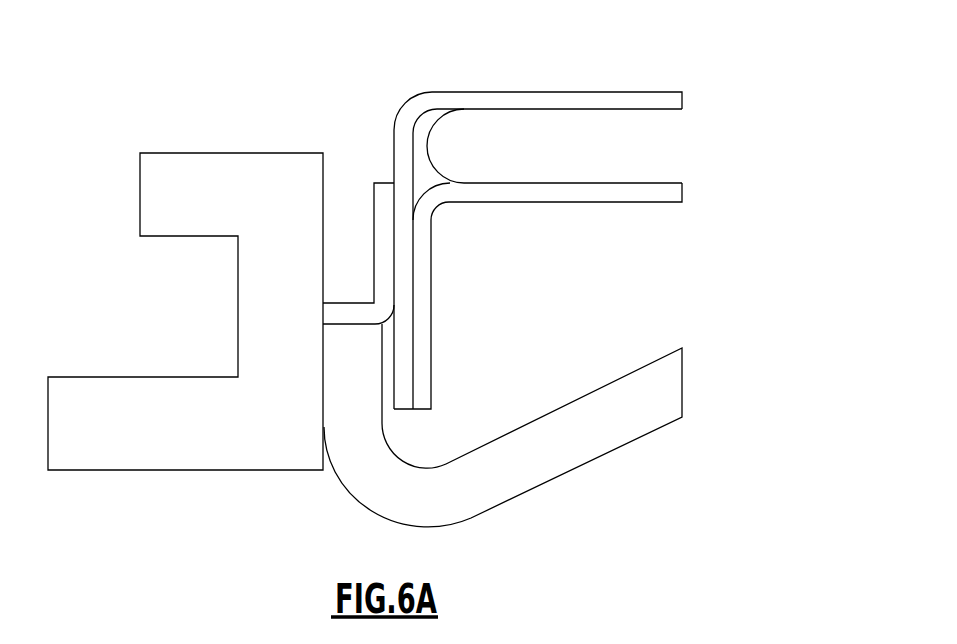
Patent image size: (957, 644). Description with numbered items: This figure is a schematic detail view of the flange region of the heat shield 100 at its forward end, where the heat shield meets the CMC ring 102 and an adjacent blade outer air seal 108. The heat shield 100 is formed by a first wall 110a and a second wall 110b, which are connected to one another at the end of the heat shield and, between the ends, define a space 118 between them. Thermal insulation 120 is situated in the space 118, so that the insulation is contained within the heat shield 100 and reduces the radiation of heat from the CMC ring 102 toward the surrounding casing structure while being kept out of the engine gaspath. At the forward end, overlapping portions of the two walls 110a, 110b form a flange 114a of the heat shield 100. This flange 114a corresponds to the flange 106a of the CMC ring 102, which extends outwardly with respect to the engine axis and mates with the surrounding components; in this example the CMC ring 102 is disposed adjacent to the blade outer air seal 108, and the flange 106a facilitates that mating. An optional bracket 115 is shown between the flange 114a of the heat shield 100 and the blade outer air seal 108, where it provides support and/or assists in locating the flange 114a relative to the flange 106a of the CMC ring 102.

The heat shield 100 is at (556, 204).
The CMC ring 102 is at (520, 458).
The flange 106a is at (345, 366).
The blade outer air seal 108 is at (206, 452).
The first wall 110a is at (614, 101).
The second wall 110b is at (642, 193).
The flange 114a is at (464, 320).
The bracket 115 is at (372, 210).
The space 118 is at (662, 153).
The thermal insulation 120 is at (557, 163).